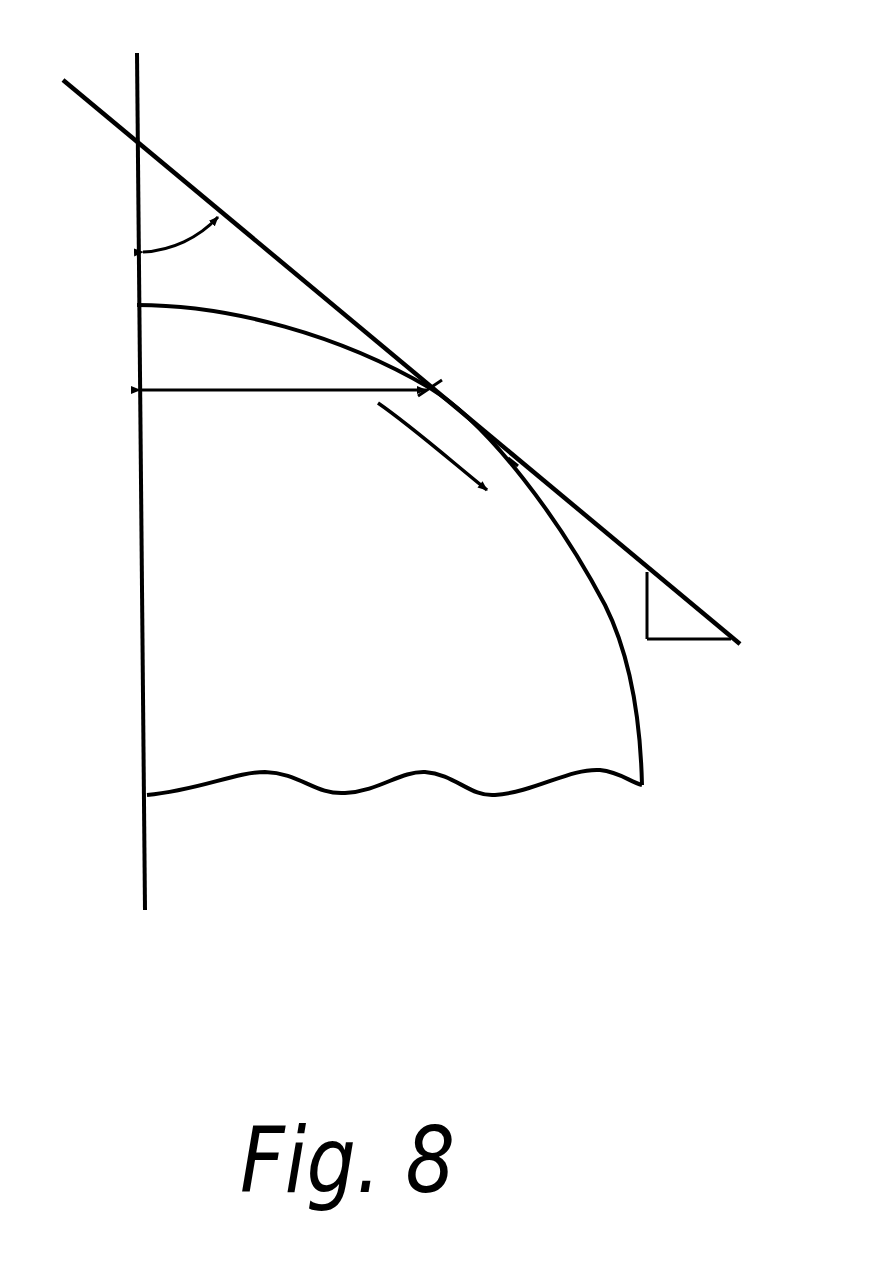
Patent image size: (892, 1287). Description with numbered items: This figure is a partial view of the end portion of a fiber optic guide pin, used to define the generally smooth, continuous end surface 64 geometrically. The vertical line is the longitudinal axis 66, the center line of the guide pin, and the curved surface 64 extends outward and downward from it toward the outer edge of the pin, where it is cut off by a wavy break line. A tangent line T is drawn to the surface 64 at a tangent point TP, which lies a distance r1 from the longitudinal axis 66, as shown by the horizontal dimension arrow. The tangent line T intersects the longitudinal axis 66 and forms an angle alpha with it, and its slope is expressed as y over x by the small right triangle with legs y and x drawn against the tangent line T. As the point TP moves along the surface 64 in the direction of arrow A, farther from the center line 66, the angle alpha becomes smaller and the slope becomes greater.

The longitudinal axis 66 is at (137, 70).
The surface 64 is at (640, 720).
The tangent line T is at (263, 248).
The tangent point TP is at (445, 387).
The distance from center line r1 is at (283, 424).
The arrow A is at (432, 457).
The horizontal component of slope x is at (689, 665).
The vertical component of slope y is at (632, 601).